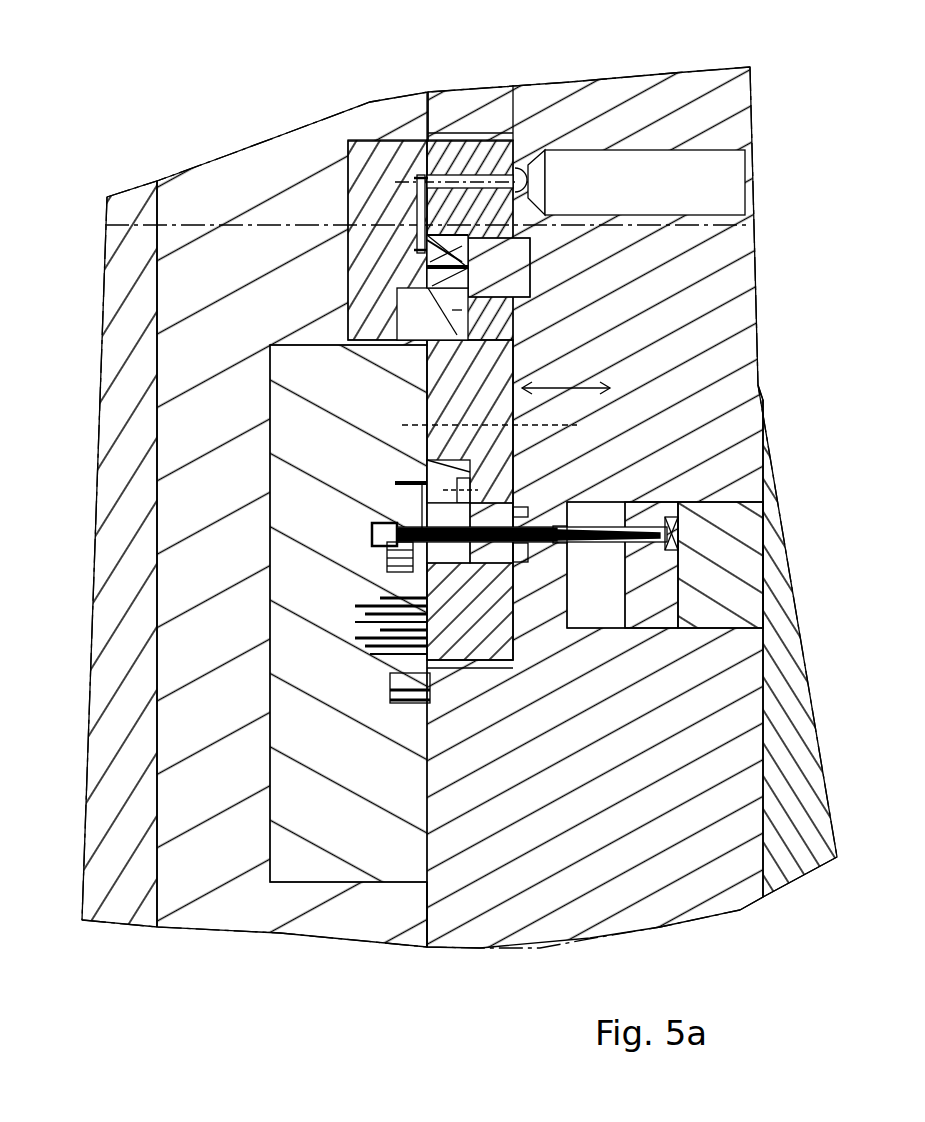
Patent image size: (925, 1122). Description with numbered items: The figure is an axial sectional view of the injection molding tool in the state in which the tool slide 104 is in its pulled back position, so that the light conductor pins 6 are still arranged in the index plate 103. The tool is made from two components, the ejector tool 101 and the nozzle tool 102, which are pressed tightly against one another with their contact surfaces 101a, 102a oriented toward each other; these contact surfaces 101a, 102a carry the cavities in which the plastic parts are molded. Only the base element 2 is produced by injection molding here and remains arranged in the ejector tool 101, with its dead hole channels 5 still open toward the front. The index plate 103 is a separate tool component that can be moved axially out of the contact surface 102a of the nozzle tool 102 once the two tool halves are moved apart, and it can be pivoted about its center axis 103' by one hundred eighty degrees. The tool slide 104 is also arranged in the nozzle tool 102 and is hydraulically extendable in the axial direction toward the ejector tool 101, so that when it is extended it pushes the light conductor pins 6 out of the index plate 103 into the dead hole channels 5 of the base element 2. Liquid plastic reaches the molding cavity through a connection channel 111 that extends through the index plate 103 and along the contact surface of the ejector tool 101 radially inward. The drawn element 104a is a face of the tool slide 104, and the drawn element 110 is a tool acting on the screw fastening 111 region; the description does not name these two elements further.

The base element 2 is at (400, 627).
The dead hole channels 5 is at (393, 525).
The light conductor pins 6 is at (452, 258).
The ejector tool 101 is at (172, 187).
The contact surface of ejector tool 101a is at (430, 935).
The nozzle tool 102 is at (697, 370).
The contact surface of nozzle tool 102a is at (430, 935).
The index plate 103 is at (484, 678).
The center axis of index plate 103' is at (349, 613).
The tool slide 104 is at (553, 528).
The housing insert face 104a is at (497, 572).
The actuating tool 110 is at (718, 178).
The connection channel 111 is at (487, 178).